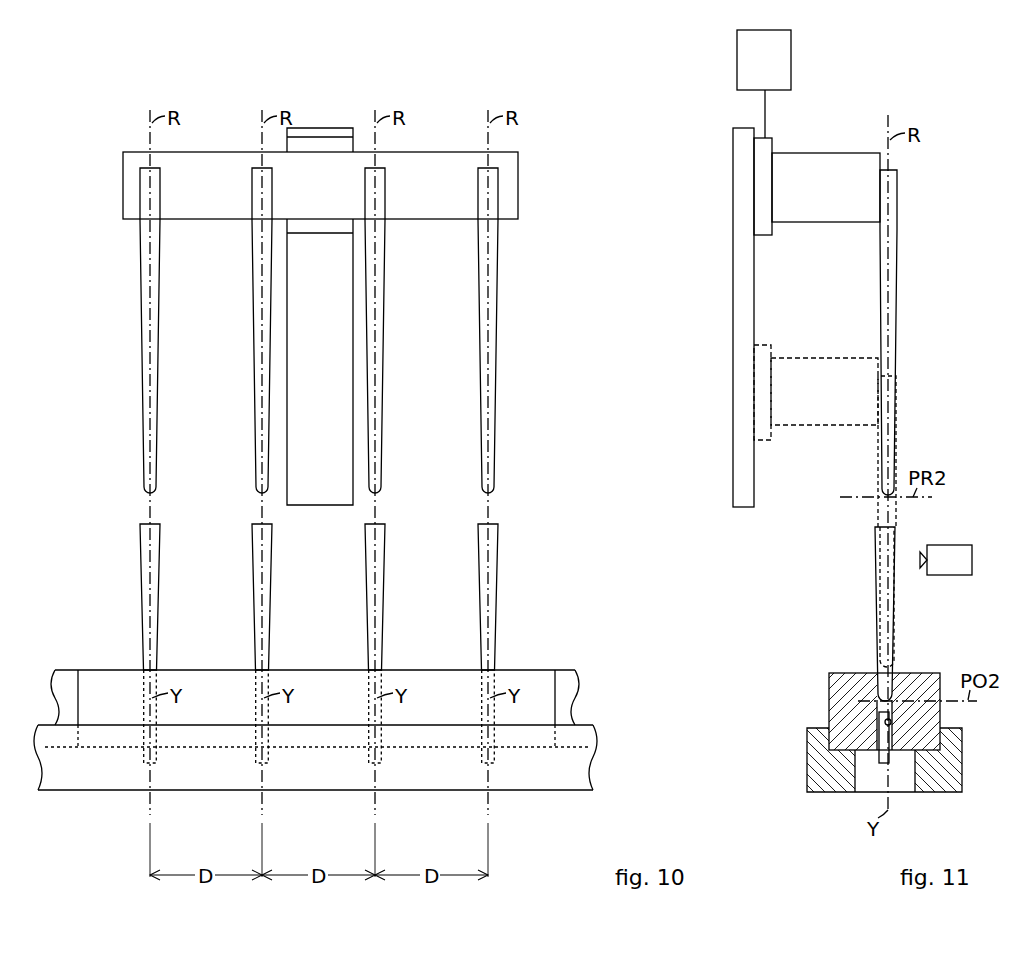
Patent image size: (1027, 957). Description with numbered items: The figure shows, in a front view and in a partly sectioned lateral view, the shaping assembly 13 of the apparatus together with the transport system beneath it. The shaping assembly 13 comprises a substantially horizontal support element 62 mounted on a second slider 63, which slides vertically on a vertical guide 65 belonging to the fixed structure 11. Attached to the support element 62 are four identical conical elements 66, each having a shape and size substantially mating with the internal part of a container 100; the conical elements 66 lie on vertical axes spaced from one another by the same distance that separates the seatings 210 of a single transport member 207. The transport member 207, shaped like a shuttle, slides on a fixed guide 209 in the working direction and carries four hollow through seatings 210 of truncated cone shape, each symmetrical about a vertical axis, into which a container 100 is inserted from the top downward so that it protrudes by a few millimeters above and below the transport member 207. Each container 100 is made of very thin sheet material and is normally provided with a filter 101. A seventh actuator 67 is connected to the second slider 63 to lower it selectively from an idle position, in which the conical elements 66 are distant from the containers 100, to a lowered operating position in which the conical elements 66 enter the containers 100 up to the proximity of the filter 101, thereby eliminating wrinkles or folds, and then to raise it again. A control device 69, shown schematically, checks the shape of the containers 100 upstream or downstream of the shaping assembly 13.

In FIG. 11, the fixed structure 11 is at (718, 236).
In FIG. 10, the shaping assembly 13 is at (513, 86).
In FIG. 11, the shaping assembly 13 is at (908, 87).
In FIG. 10, the support element 62 is at (510, 183).
In FIG. 11, the support element 62 is at (825, 275).
In FIG. 10, the second slider 63 is at (317, 225).
In FIG. 11, the second slider 63 is at (785, 289).
In FIG. 10, the vertical guide 65 is at (335, 132).
In FIG. 11, the vertical guide 65 is at (742, 367).
In FIG. 10, the conical element 66 is at (319, 330).
In FIG. 11, the conical element 66 is at (886, 351).
In FIG. 11, the seventh actuator 67 is at (782, 58).
In FIG. 11, the control device 69 is at (963, 552).
In FIG. 10, the container 100 is at (344, 643).
In FIG. 11, the container 100 is at (893, 608).
In FIG. 11, the filter 101 is at (880, 732).
In FIG. 10, the transport member 207 is at (324, 688).
In FIG. 11, the transport member 207 is at (915, 677).
In FIG. 10, the fixed guide 209 is at (580, 773).
In FIG. 11, the fixed guide 209 is at (957, 759).
In FIG. 10, the seating 210 is at (348, 653).
In FIG. 11, the seating 210 is at (890, 723).